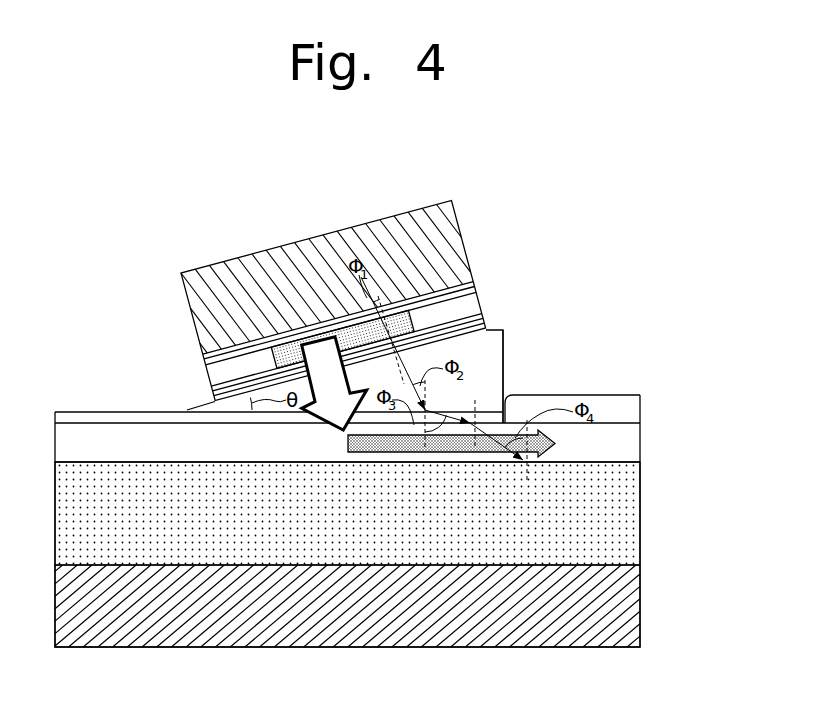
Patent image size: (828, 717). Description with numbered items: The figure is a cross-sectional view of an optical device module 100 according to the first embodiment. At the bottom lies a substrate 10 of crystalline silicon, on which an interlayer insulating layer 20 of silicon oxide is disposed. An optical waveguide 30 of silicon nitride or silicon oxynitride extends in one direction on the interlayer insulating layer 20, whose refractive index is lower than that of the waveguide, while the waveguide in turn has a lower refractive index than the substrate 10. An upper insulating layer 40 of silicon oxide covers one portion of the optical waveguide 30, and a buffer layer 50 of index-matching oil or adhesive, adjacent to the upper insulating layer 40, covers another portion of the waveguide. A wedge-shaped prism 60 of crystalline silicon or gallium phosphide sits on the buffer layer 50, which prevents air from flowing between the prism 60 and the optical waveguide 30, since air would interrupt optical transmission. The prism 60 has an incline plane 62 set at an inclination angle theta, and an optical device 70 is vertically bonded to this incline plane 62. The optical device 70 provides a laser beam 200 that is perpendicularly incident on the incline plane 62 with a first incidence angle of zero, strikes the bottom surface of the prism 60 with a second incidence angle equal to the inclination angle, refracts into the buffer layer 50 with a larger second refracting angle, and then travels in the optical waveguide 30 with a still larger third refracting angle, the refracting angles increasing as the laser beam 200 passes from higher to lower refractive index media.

The substrate 10 is at (633, 605).
The interlayer insulating layer 20 is at (633, 505).
The optical waveguide 30 is at (632, 441).
The upper insulating layer 40 is at (632, 410).
The buffer layer 50 is at (486, 412).
The prism 60 is at (493, 353).
The incline plane 62 is at (501, 330).
The optical device 70 is at (491, 255).
The optical device module 100 is at (672, 157).
The laser beam 200 is at (366, 309).